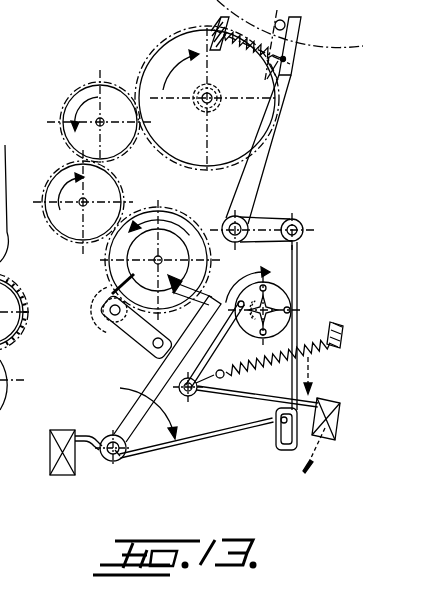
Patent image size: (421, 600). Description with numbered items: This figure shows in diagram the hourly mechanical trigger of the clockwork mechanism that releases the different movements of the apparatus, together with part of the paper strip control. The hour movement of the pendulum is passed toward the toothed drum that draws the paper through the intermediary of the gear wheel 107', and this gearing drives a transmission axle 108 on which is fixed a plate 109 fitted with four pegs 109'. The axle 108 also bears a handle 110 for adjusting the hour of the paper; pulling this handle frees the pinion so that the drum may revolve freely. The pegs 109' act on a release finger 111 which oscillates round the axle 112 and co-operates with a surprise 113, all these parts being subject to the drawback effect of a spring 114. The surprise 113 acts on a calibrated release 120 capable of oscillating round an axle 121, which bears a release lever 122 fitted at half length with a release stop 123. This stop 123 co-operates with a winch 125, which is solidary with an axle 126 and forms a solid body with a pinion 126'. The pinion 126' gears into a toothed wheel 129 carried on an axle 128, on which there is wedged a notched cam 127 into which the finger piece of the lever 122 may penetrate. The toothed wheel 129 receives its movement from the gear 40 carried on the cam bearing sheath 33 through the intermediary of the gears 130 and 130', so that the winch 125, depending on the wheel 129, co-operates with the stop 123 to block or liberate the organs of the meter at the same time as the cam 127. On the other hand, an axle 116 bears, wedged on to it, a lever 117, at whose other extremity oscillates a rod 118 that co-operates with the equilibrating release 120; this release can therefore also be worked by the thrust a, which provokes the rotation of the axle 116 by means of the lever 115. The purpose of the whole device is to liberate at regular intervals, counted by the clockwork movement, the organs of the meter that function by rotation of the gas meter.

The thrust a is at (278, 21).
The cam bearing sheath 33 is at (214, 93).
The gear 40 is at (186, 166).
The gear wheel 107' is at (19, 277).
The transmission axle 108 is at (288, 318).
The plate 109 is at (294, 301).
The pegs 109' is at (299, 326).
The handle 110 is at (268, 303).
The release finger 111 is at (226, 348).
The axle 112 is at (192, 397).
The surprise 113 is at (258, 401).
The spring 114 is at (270, 366).
The lever 115 is at (288, 74).
The axle 116 is at (250, 216).
The lever 117 is at (258, 236).
The rod 118 is at (280, 451).
The calibrated release 120 is at (180, 452).
The axle 121 is at (115, 459).
The release lever 122 is at (138, 402).
The release stop 123 is at (157, 348).
The winch 125 is at (136, 327).
The axle 126 is at (88, 304).
The pinion 126' is at (77, 309).
The notched cam 127 is at (108, 263).
The axle 128 is at (169, 267).
The toothed wheel 129 is at (127, 247).
The gear 130 is at (83, 202).
The gear 130' is at (100, 112).